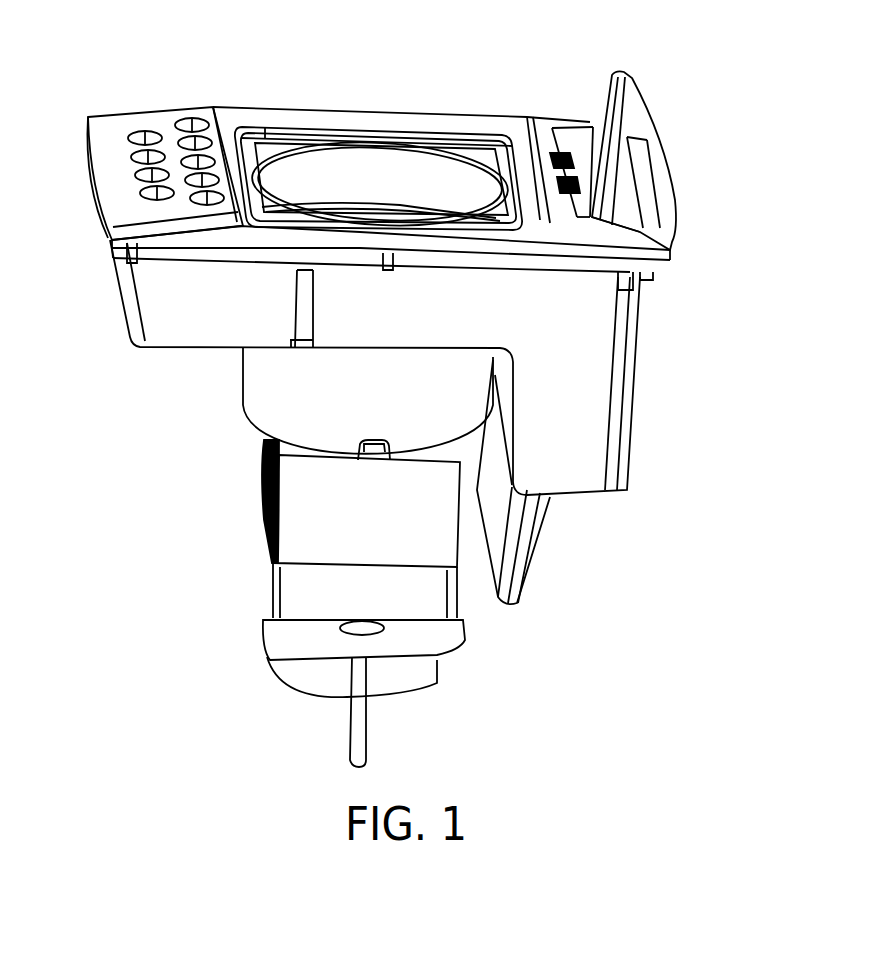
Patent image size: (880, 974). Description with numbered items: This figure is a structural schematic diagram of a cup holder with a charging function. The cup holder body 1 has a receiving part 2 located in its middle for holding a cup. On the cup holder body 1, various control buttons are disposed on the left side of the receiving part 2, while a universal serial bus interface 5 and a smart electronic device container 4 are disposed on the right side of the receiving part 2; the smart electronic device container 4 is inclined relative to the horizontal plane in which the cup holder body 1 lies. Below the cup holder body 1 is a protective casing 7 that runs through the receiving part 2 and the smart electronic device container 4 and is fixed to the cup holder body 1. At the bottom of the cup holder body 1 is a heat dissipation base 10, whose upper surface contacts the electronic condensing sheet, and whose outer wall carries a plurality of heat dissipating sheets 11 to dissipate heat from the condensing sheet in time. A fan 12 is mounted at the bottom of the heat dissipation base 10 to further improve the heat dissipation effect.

The cup holder body 1 is at (193, 102).
The receiving part 2 is at (328, 387).
The smart electronic device container 4 is at (535, 540).
The universal serial bus (USB) interface 5 is at (557, 153).
The protective casing 7 is at (588, 369).
The heat dissipation base 10 is at (330, 509).
The heat dissipating sheets 11 is at (265, 487).
The fan 12 is at (360, 601).